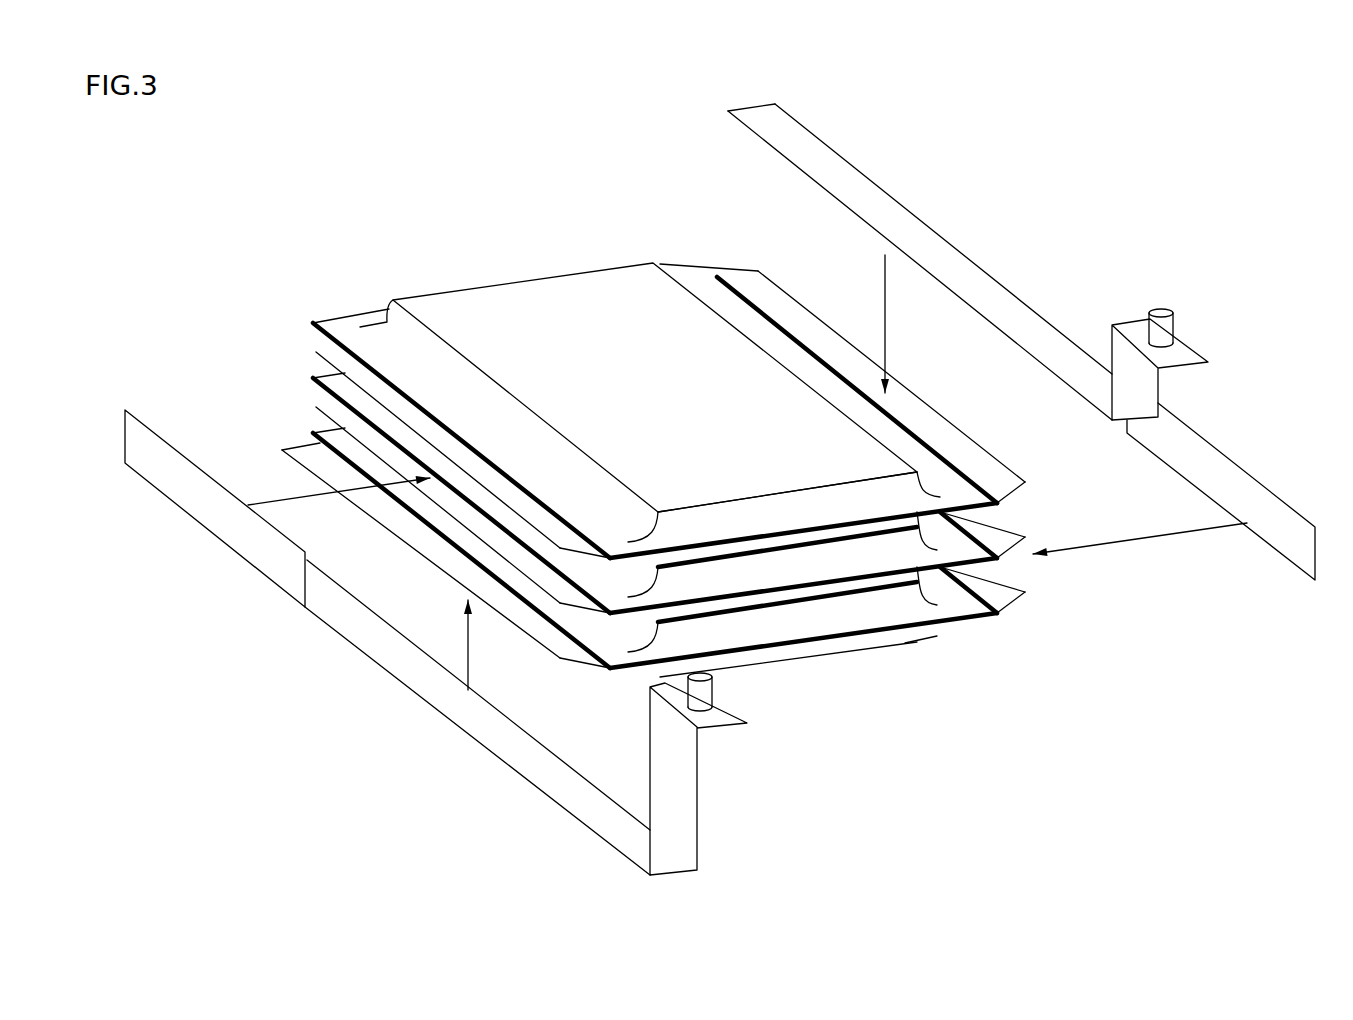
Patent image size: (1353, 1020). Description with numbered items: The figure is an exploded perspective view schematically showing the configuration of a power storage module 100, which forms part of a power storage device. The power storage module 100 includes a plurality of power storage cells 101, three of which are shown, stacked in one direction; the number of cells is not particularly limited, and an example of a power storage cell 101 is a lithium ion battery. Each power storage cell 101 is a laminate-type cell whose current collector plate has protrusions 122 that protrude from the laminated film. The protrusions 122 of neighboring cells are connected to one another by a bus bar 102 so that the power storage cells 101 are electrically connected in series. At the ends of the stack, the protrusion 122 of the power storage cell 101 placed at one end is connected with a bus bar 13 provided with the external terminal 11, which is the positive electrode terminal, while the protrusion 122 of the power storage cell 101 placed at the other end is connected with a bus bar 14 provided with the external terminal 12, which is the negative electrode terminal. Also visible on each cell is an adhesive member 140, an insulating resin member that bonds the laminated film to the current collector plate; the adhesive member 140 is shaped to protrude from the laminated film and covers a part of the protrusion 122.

The power storage module 100 is at (487, 284).
The power storage cell 101 is at (820, 615).
The bus bar 102 is at (263, 559).
The external terminal 11 is at (713, 686).
The external terminal 12 is at (1161, 309).
The bus bar 13 is at (475, 738).
The bus bar 14 is at (1033, 306).
The protrusion 122 is at (313, 325).
The adhesive member 140 is at (316, 352).